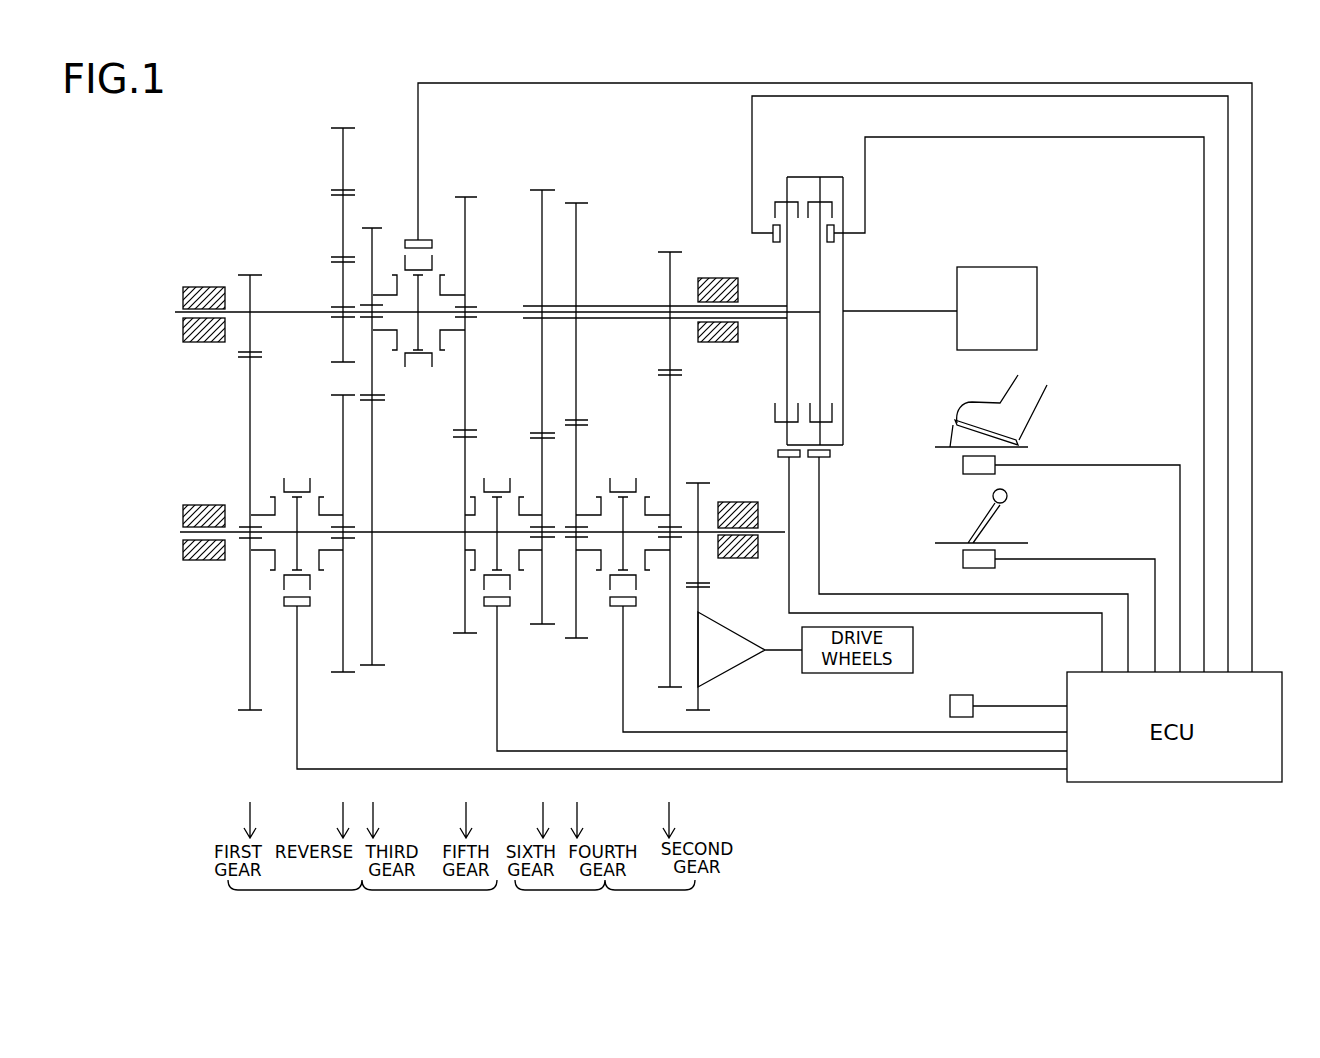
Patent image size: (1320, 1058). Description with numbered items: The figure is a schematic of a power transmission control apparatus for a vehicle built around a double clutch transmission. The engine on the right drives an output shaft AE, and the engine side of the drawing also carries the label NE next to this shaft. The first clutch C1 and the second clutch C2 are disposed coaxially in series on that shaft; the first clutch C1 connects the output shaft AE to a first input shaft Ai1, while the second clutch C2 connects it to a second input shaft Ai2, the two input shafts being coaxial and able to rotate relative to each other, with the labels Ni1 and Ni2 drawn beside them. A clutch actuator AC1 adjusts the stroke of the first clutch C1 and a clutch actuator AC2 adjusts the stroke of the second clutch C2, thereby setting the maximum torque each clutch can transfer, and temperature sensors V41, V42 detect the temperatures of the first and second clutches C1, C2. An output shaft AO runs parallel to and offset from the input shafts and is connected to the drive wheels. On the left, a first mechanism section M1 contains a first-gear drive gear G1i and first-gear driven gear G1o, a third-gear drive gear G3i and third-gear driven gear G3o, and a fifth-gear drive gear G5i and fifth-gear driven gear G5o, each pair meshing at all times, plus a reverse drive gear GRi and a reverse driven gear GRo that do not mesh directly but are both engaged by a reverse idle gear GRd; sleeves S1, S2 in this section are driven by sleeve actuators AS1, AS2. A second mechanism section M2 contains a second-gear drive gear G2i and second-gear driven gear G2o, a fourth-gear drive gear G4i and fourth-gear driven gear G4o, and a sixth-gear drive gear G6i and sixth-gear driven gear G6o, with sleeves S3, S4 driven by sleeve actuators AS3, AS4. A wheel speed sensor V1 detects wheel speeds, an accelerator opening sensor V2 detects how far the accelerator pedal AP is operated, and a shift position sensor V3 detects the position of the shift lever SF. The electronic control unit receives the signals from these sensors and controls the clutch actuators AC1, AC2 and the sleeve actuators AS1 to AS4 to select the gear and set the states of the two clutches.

The first input shaft Ai1 is at (500, 309).
The second input shaft Ai2 is at (620, 303).
The first input shaft rotational speed Ni1 is at (504, 236).
The second input shaft rotational speed Ni2 is at (627, 183).
The output shaft AO is at (414, 536).
The first-gear drive gear G1i is at (252, 335).
The first-gear driven gear G1o is at (252, 398).
The reverse idle gear GRd is at (342, 228).
The reverse drive gear GRi is at (342, 292).
The reverse driven gear GRo is at (342, 440).
The third-gear drive gear G3i is at (374, 382).
The third-gear driven gear G3o is at (374, 478).
The fifth-gear drive gear G5i is at (464, 412).
The fifth-gear driven gear G5o is at (464, 508).
The sixth-gear drive gear G6i is at (541, 397).
The sixth-gear driven gear G6o is at (541, 458).
The fourth-gear drive gear G4i is at (578, 382).
The fourth-gear driven gear G4o is at (578, 456).
The second-gear drive gear G2i is at (672, 363).
The second-gear driven gear G2o is at (672, 424).
The sleeve S1 is at (284, 582).
The sleeve S2 is at (405, 265).
The sleeve S3 is at (609, 601).
The sleeve S4 is at (484, 583).
The sleeve actuator AS1 is at (303, 608).
The sleeve actuator AS2 is at (426, 240).
The sleeve actuator AS3 is at (627, 606).
The sleeve actuator AS4 is at (502, 606).
The first clutch C1 is at (825, 170).
The second clutch C2 is at (790, 165).
The temperature sensor V41 is at (835, 243).
The temperature sensor V42 is at (774, 243).
The output shaft of the engine AE is at (908, 309).
The engine rotational speed NE is at (914, 230).
The clutch actuator AC1 is at (831, 458).
The clutch actuator AC2 is at (778, 455).
The accelerator pedal AP is at (950, 432).
The wheel speed sensor V1 is at (962, 695).
The accelerator opening sensor V2 is at (963, 465).
The shift position sensor V3 is at (963, 559).
The shift lever SF is at (976, 522).
The first mechanism section M1 is at (362, 899).
The second mechanism section M2 is at (605, 899).